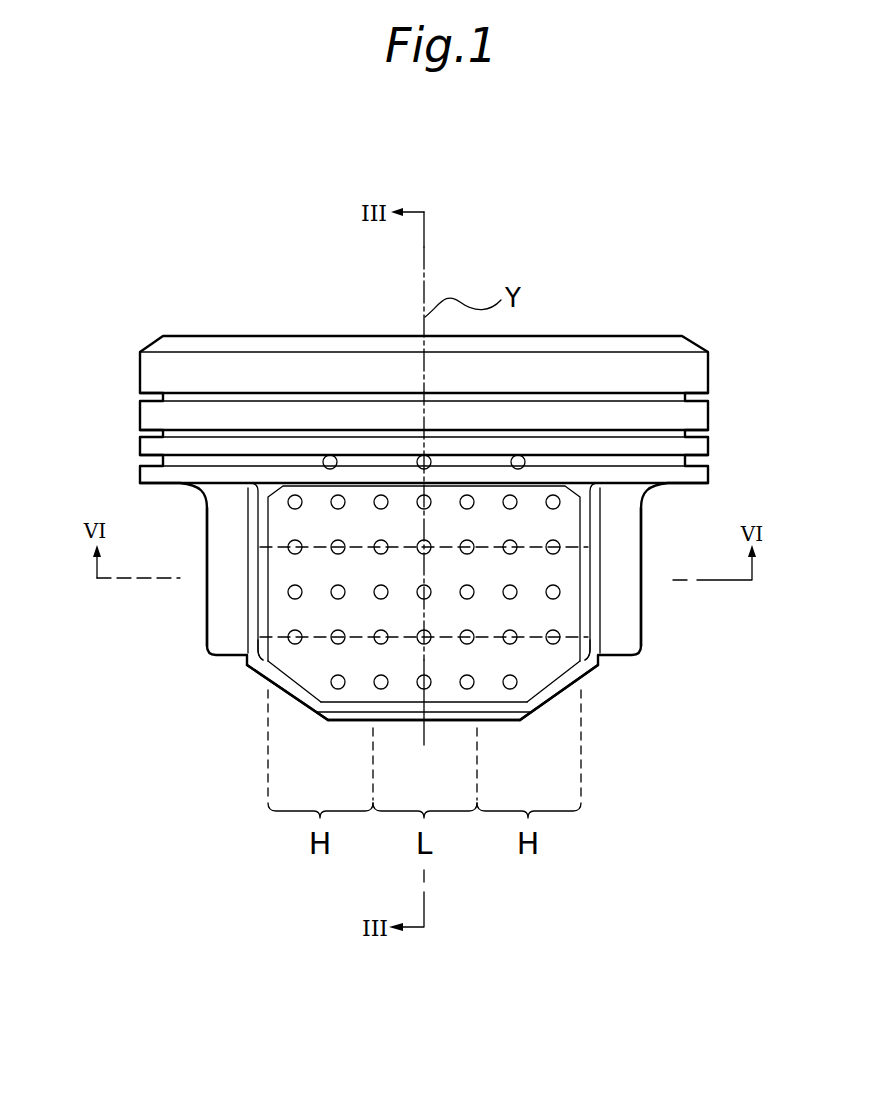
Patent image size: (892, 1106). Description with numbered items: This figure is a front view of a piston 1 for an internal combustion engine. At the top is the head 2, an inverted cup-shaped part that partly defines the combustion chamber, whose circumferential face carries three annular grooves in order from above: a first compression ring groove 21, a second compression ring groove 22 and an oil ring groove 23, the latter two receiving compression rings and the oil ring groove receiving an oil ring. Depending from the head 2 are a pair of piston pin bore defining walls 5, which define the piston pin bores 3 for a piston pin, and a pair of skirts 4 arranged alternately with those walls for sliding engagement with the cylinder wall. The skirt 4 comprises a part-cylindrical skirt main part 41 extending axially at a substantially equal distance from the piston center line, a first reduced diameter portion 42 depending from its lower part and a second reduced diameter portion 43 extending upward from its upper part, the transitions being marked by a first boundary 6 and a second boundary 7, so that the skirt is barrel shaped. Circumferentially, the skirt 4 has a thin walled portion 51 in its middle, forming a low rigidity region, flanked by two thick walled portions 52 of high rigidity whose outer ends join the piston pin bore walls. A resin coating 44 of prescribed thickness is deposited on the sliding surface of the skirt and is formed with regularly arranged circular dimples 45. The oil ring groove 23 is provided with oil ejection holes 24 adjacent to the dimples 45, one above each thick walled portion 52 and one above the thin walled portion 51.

The piston 1 is at (663, 280).
The head 2 is at (708, 335).
The first compression ring groove 21 is at (140, 397).
The second compression ring groove 22 is at (140, 433).
The oil ring groove 23 is at (140, 458).
The oil ejection hole 24 is at (333, 456).
The piston pin bore 3 is at (630, 621).
The skirt 4 is at (335, 733).
The skirt main part 41 is at (587, 587).
The first reduced diameter portion 42 is at (588, 650).
The second reduced diameter portion 43 is at (588, 523).
The resin coating 44 is at (320, 686).
The dimple 45 is at (520, 684).
The piston pin bore defining wall 5 is at (210, 513).
The thin walled portion 51 is at (407, 714).
The thick walled portion 52 is at (280, 686).
The first boundary 6 is at (313, 633).
The second boundary 7 is at (310, 548).